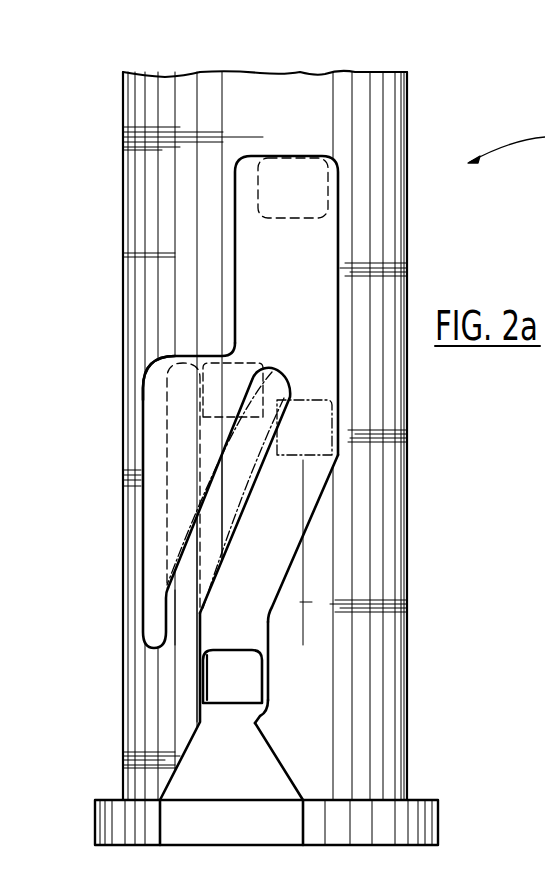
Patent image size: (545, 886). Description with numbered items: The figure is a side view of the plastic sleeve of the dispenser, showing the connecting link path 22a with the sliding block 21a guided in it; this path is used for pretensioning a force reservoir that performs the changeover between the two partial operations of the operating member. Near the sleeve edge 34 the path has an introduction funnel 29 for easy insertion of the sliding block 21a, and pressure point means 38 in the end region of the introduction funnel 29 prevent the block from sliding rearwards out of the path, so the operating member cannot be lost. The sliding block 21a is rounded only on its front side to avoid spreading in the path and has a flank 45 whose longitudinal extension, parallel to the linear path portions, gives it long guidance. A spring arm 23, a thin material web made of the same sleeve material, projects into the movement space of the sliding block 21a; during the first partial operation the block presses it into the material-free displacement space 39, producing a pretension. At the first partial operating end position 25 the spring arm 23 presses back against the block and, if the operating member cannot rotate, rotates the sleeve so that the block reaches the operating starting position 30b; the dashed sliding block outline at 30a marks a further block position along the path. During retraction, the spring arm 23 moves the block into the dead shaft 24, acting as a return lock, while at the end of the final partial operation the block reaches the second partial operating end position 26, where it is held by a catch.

The second partial operating end position 26 is at (293, 168).
The first partial operating end position 25 is at (207, 359).
The operating starting position 30b is at (311, 399).
The material-free displacement space 39 is at (148, 383).
The dead shaft 24 is at (152, 412).
The spring arm 23 is at (218, 530).
The connecting link path 22a is at (297, 513).
The flank 45 is at (262, 687).
The sliding block 21a is at (255, 675).
The contact point 30a is at (201, 676).
The pressure point means 38 is at (262, 722).
The introduction funnel 29 is at (277, 766).
The sleeve edge 34 is at (108, 822).